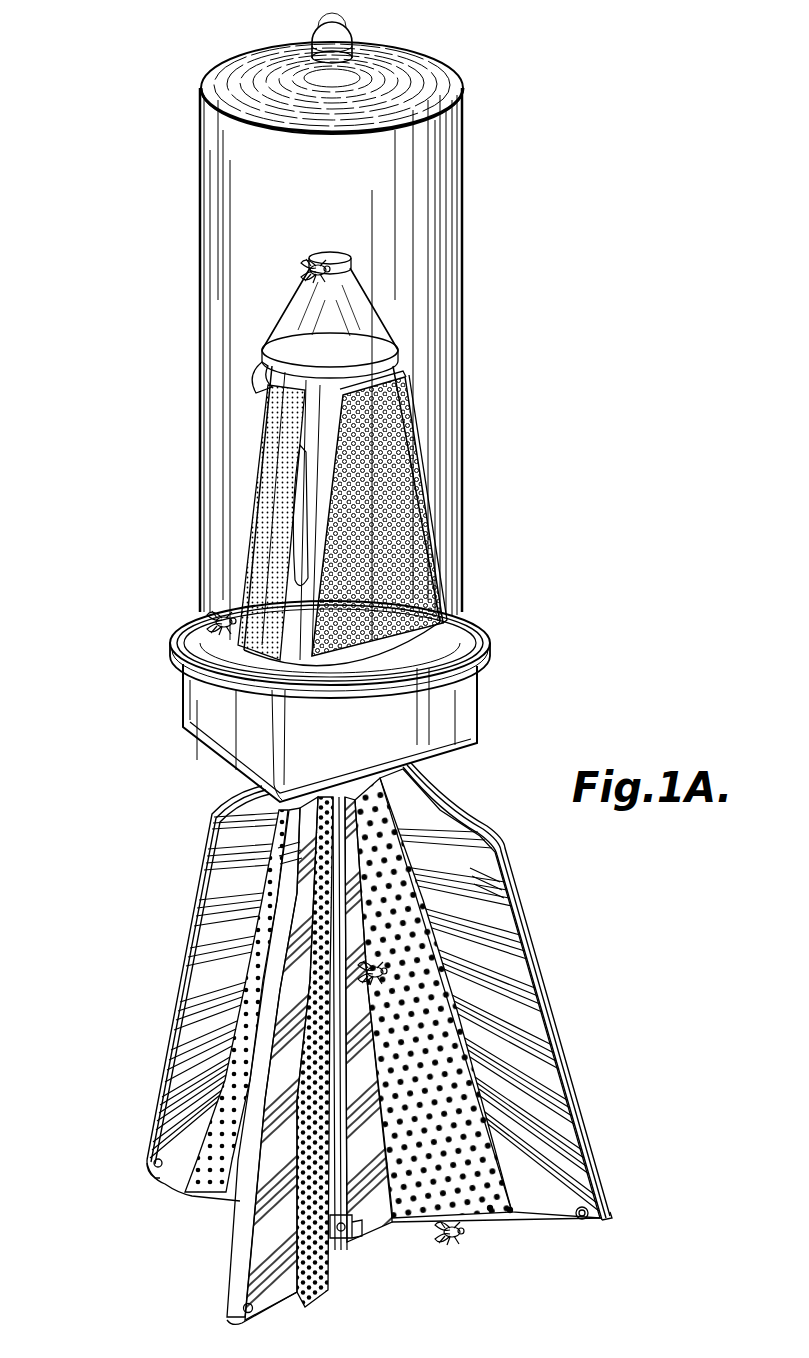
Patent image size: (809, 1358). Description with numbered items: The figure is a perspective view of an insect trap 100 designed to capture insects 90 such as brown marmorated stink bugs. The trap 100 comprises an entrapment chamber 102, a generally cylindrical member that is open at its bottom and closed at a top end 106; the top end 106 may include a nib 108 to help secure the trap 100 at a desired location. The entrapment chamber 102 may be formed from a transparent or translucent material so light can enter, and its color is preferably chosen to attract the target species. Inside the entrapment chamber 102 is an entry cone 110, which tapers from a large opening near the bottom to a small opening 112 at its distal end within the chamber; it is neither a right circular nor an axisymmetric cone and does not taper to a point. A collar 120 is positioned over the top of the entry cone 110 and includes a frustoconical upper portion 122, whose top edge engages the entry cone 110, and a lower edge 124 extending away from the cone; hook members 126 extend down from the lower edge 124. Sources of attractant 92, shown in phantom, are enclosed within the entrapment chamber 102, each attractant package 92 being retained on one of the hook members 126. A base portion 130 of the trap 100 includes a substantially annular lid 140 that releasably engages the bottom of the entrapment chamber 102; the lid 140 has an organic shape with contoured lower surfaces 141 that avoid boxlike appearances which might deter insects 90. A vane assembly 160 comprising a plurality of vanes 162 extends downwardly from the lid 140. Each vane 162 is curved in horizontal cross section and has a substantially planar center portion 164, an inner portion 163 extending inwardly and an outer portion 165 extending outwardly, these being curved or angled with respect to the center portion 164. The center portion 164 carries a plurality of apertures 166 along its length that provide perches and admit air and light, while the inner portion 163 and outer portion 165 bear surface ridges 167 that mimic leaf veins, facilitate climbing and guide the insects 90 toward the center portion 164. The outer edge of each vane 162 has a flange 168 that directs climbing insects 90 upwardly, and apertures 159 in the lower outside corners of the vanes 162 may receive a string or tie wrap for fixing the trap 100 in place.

The insect trap 100 is at (556, 178).
The entrapment chamber 102 is at (470, 378).
The top end 106 is at (428, 70).
The nib 108 is at (318, 30).
The entry cone 110 is at (434, 493).
The small opening 112 is at (350, 258).
The collar 120 is at (392, 311).
The frustoconical upper portion 122 is at (358, 310).
The lower edge 124 is at (300, 392).
The hook member 126 is at (262, 382).
The base portion 130 is at (122, 722).
The lid 140 is at (478, 738).
The contoured lower surfaces 141 is at (221, 760).
The apertures 159 is at (152, 1166).
The vane assembly 160 is at (560, 988).
The vane 162 is at (534, 938).
The inner portion 163 is at (350, 1236).
The center portion 164 is at (484, 1118).
The outer portion 165 is at (528, 1035).
The apertures 166 is at (510, 1213).
The surface ridges 167 is at (490, 882).
The flange 168 is at (512, 903).
The insect 90 is at (305, 270).
The attractant 92 is at (410, 408).